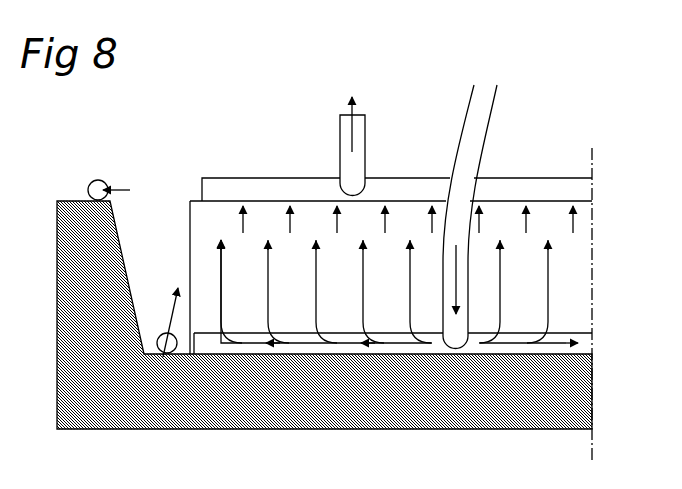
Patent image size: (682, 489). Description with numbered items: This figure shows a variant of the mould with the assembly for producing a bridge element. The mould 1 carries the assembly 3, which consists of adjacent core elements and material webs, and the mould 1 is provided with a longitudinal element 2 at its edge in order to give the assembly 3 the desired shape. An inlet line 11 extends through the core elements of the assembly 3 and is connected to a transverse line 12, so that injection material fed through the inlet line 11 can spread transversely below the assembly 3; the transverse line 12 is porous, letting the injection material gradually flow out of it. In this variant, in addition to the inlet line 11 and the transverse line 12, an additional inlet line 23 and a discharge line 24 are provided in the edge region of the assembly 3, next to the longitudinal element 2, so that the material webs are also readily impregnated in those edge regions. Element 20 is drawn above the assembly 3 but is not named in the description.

The mould 1 is at (385, 405).
The longitudinal element 2 is at (87, 309).
The assembly 3 is at (603, 213).
The inlet line 11 is at (476, 122).
The transverse line 12 is at (583, 342).
The cover plate 20 is at (268, 192).
The additional inlet line 23 is at (165, 353).
The discharge line 24 is at (93, 182).